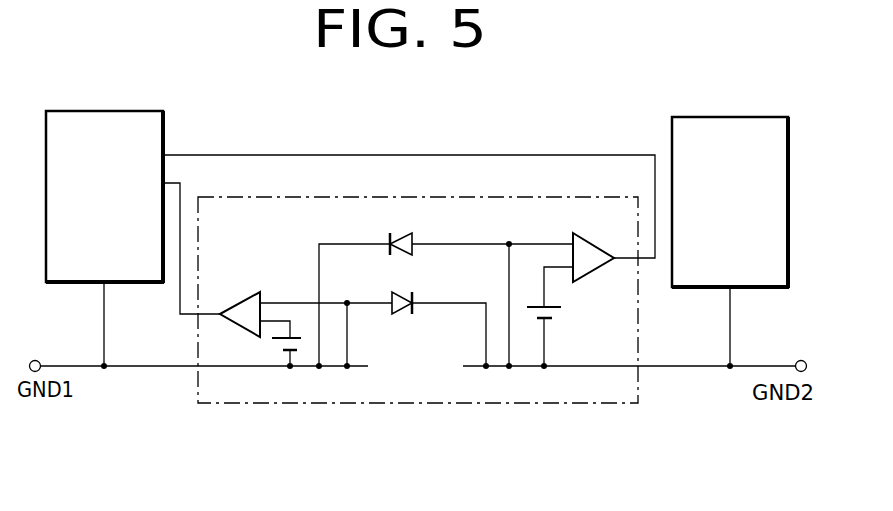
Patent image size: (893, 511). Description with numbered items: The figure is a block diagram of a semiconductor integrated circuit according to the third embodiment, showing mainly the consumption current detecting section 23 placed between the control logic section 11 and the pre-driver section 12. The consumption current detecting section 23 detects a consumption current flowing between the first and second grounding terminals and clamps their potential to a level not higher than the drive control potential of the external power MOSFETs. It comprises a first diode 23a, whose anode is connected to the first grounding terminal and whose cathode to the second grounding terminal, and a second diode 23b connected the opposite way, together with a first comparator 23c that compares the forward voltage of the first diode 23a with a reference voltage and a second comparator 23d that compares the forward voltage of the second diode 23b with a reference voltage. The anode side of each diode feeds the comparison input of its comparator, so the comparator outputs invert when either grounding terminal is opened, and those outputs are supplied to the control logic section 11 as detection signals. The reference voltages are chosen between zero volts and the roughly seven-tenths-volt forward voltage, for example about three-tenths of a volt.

The control logic section 11 is at (163, 133).
The pre-driver section 12 is at (672, 140).
The consumption current detecting section 23 is at (562, 197).
The first diode 23a is at (403, 314).
The second diode 23b is at (400, 255).
The first comparator 23c is at (250, 292).
The second comparator 23d is at (573, 233).